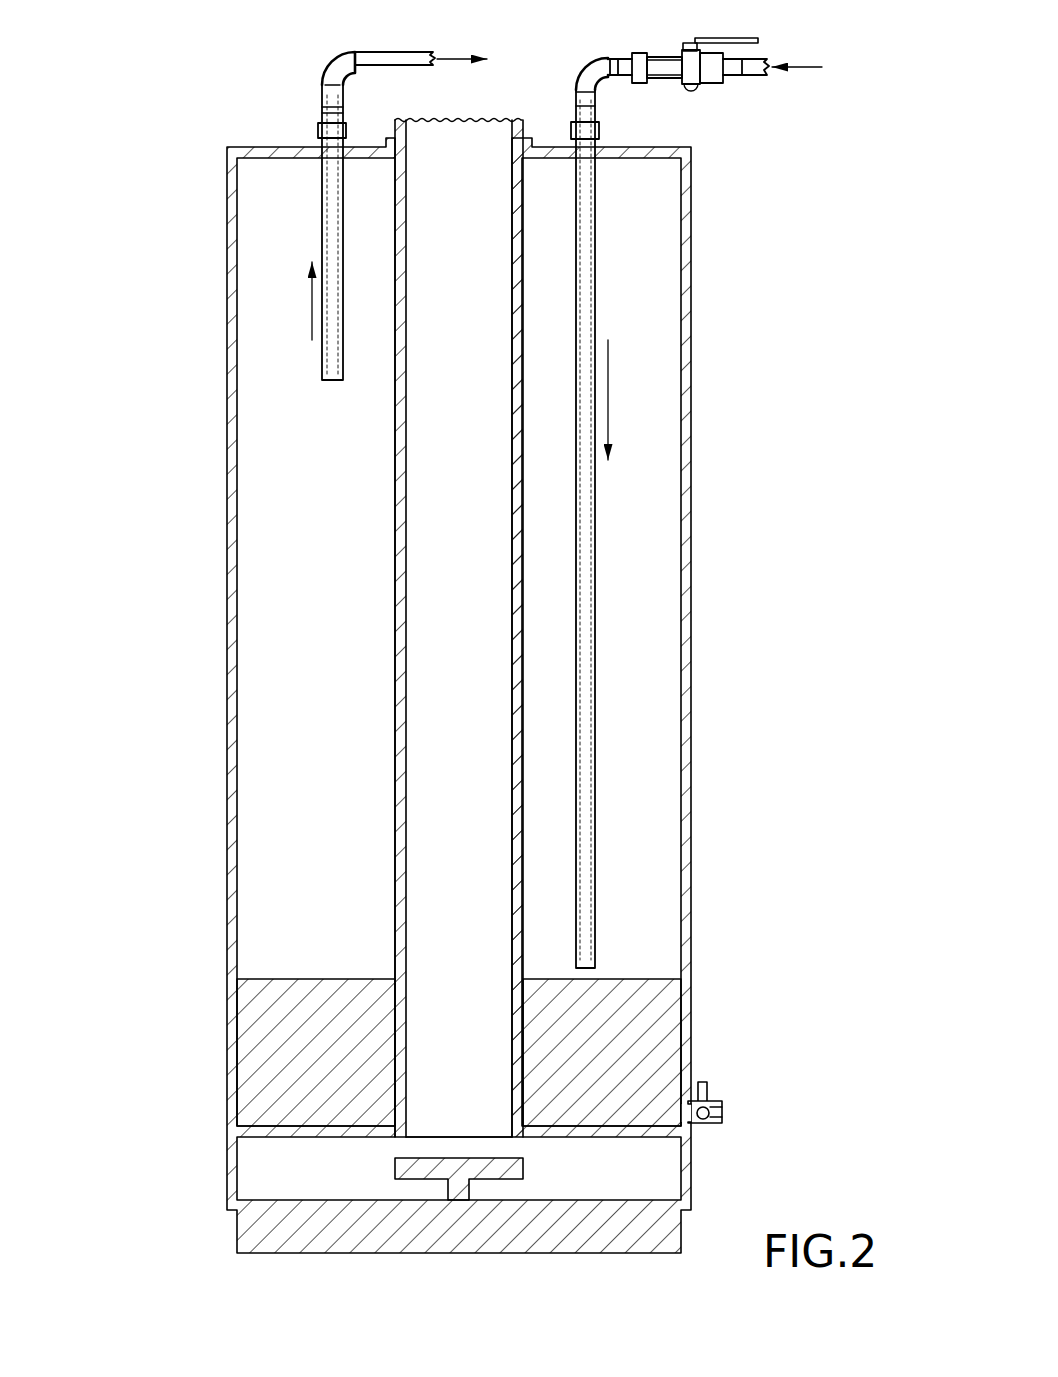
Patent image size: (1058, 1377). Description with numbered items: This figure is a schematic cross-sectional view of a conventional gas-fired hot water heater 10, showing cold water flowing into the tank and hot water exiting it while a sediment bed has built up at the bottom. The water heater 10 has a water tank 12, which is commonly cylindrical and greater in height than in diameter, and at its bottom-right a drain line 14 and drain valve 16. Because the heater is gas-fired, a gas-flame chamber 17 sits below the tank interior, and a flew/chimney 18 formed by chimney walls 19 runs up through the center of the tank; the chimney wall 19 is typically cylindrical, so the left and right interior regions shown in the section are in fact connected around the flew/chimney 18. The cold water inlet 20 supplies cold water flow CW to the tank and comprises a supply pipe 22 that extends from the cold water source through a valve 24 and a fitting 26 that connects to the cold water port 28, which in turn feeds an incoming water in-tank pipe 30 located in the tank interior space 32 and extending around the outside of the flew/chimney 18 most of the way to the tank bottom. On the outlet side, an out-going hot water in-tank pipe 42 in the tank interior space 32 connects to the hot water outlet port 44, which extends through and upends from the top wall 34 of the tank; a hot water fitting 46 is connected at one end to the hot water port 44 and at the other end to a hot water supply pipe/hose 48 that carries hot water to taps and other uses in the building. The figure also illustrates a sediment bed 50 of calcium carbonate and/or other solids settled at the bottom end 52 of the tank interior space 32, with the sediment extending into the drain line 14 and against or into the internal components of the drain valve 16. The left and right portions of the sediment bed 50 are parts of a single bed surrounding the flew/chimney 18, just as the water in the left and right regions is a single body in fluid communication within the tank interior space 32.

The hot water heater 10 is at (471, 626).
The water tank 12 is at (227, 527).
The drain line 14 is at (703, 1125).
The drain valve 16 is at (703, 1083).
The gas-flame chamber 17 is at (360, 1168).
The flew/chimney 18 is at (465, 815).
The chimney walls 19 is at (512, 912).
The cold water inlet 20 is at (680, 50).
The supply pipe 22 is at (765, 58).
The valve 24 is at (695, 65).
The fitting 26 is at (587, 80).
The cold water port 28 is at (600, 127).
The incoming water in-tank pipe 30 is at (597, 532).
The tank interior space 32 is at (303, 690).
The top wall 34 is at (358, 145).
The out-going hot water in-tank pipe 42 is at (320, 212).
The hot water outlet port 44 is at (318, 126).
The hot water fitting 46 is at (333, 75).
The hot water supply pipe/hose 48 is at (398, 52).
The sediment bed 50 is at (575, 1022).
The bottom end 52 is at (293, 1078).